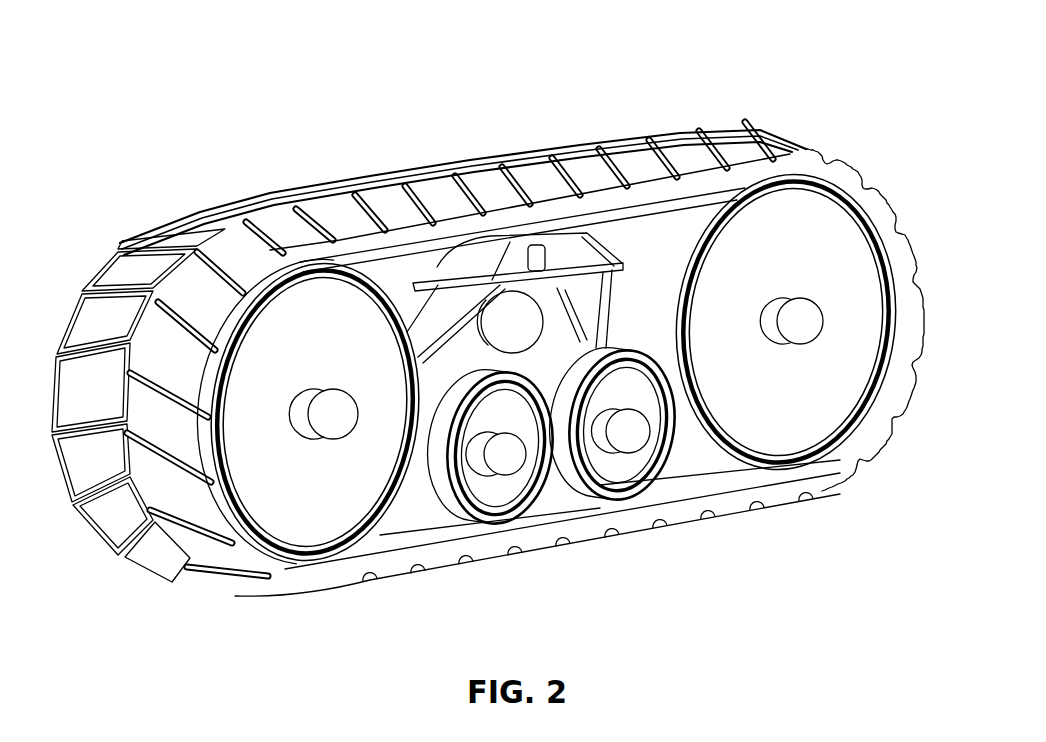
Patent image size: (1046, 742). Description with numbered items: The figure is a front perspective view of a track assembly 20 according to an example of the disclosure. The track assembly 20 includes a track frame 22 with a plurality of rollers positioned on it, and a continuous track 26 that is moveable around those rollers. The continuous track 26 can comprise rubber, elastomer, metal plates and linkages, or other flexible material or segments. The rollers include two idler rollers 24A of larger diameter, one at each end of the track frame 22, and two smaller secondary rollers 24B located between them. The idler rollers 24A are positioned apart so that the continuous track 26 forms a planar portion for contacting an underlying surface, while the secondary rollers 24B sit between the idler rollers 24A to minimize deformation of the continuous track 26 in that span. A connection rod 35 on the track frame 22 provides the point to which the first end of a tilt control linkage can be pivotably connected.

The track assembly 20 is at (233, 152).
The track frame 22 is at (647, 243).
The idler rollers 24A is at (772, 430).
The secondary roller 24B is at (507, 500).
The continuous track 26 is at (154, 228).
The connection rod 35 is at (527, 250).